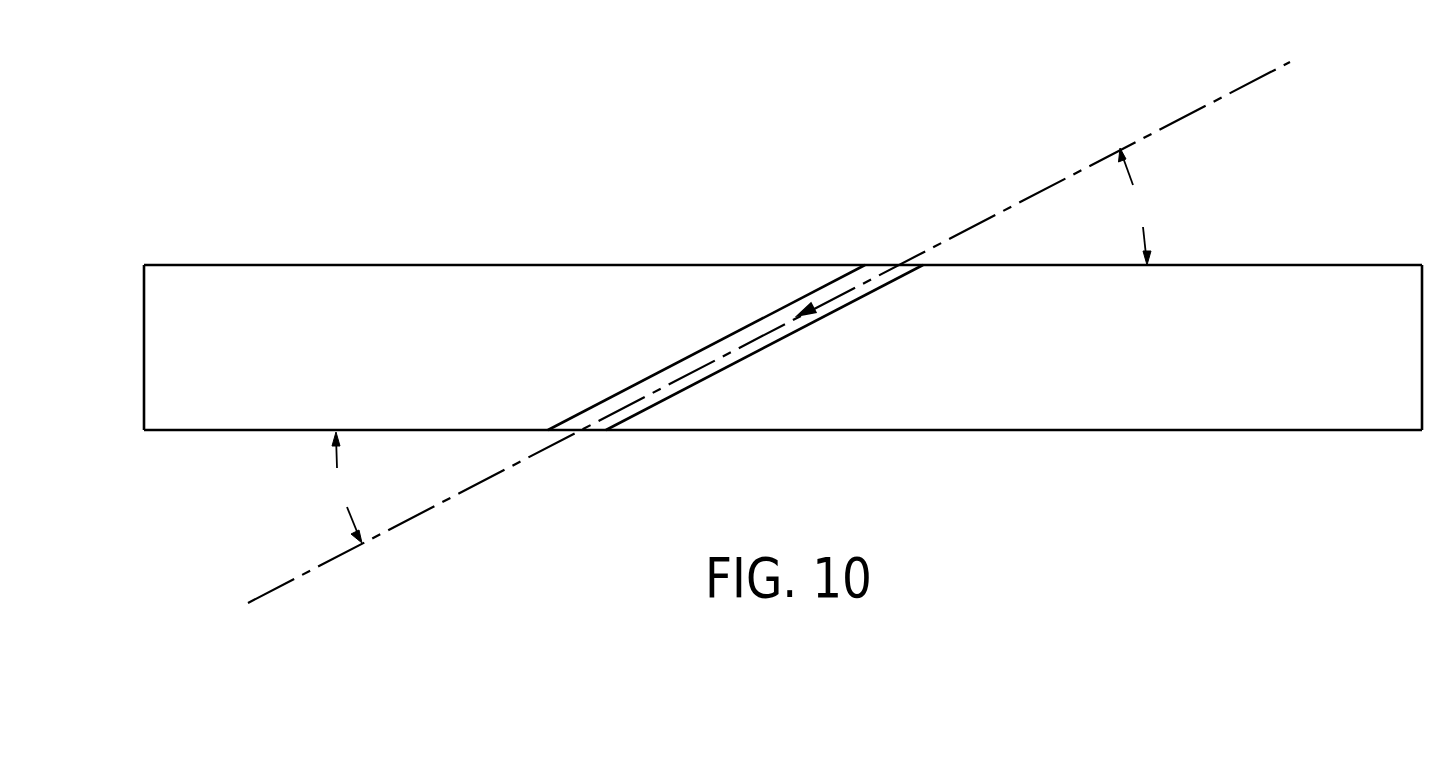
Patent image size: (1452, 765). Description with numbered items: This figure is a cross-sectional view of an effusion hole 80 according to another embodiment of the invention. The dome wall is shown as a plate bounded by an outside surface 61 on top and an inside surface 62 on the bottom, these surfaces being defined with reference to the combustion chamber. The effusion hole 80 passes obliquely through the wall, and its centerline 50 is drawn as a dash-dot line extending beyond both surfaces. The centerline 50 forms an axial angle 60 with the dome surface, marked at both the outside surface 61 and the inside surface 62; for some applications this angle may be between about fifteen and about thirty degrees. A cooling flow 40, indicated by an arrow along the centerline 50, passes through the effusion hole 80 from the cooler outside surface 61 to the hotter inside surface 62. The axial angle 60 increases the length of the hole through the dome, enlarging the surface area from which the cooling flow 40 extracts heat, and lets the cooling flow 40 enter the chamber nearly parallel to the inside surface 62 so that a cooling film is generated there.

The cooling flow 40 is at (842, 293).
The centerline 50 is at (1213, 102).
The axial angle 60 is at (740, 345).
The outside surface 61 is at (1350, 265).
The inside surface 62 is at (1278, 430).
The effusion hole 80 is at (632, 392).